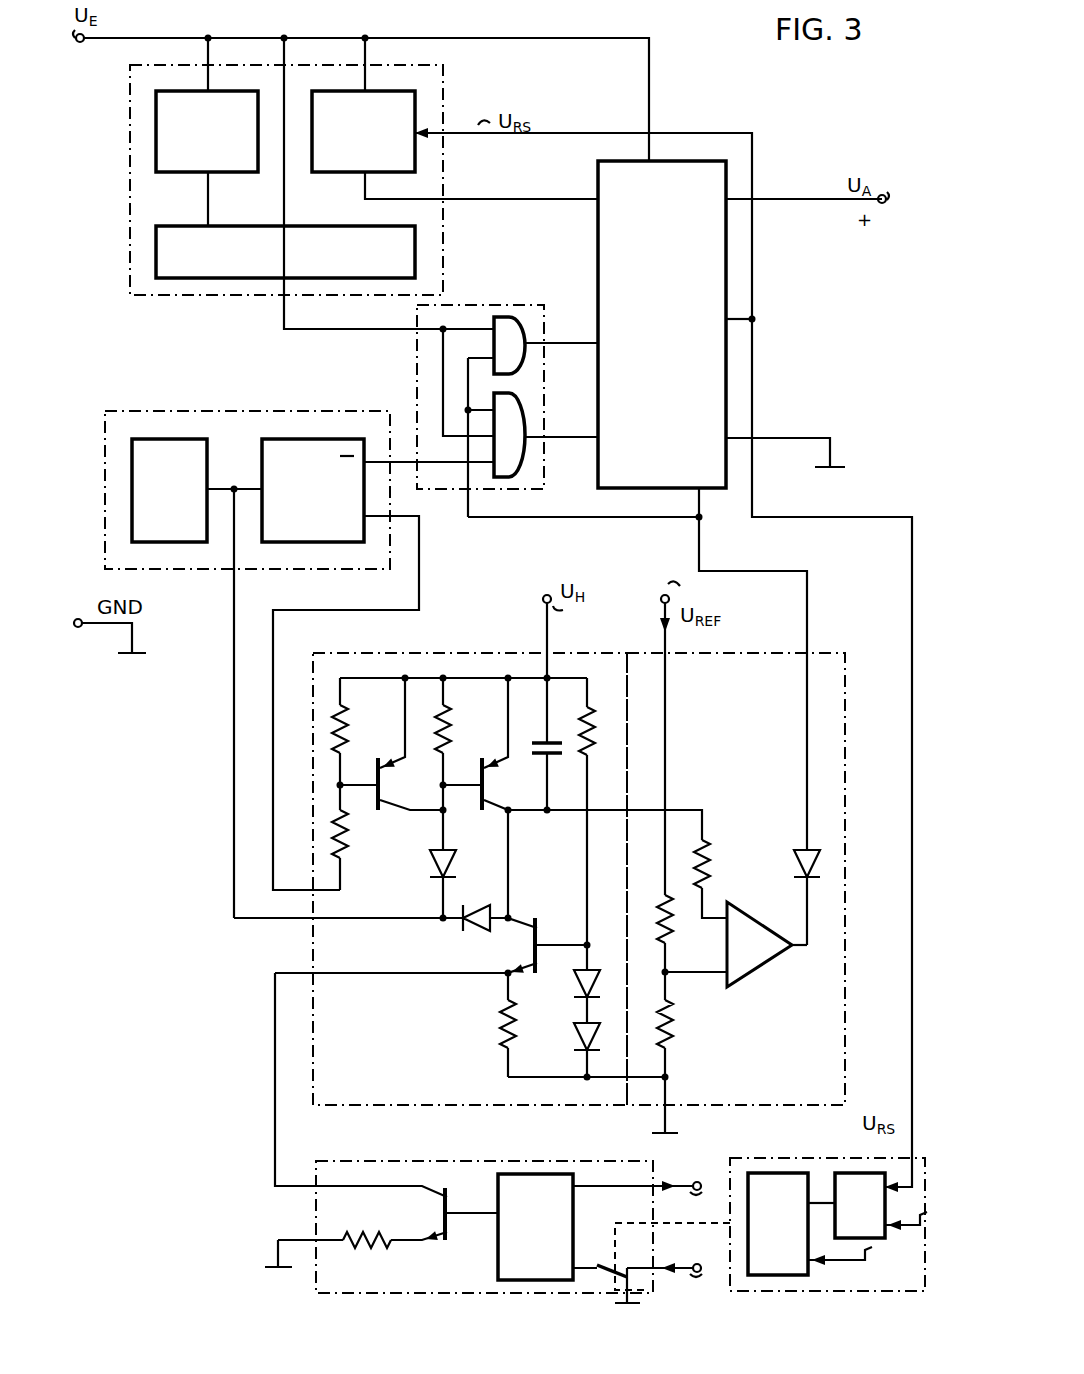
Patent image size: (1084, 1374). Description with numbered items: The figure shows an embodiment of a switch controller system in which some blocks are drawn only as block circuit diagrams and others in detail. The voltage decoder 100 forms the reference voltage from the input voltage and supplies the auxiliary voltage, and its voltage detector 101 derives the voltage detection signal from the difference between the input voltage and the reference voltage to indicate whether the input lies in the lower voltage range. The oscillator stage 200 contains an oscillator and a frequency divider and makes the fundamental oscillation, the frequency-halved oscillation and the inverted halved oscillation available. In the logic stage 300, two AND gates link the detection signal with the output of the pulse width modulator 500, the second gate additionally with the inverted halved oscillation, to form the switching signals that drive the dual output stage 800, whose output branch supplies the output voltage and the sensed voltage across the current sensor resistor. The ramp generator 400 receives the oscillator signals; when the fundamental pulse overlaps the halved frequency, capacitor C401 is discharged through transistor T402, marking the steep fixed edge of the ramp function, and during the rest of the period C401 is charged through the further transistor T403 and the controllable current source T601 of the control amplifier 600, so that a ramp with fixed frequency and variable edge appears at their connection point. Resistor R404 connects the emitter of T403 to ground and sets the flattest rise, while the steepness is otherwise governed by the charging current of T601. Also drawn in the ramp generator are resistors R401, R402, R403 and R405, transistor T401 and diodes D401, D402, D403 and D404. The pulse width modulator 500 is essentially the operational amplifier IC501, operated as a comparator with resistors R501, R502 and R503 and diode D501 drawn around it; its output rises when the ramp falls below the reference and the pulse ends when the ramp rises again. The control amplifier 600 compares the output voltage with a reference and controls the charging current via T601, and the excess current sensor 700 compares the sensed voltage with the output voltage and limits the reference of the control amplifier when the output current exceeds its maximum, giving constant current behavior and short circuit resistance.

The voltage decoder 100 is at (364, 196).
The voltage detector 101 is at (255, 280).
The oscillator stage 200 is at (150, 407).
The logic stage 300 is at (478, 302).
The ramp generator 400 is at (443, 835).
The pulse width modulator 500 is at (751, 857).
The control amplifier 600 is at (447, 1140).
The excess current sensor 700 is at (770, 1155).
The dual output stage 800 is at (697, 156).
The resistor R401 is at (355, 703).
The resistor R402 is at (328, 848).
The resistor R403 is at (452, 703).
The resistor R404 is at (497, 1033).
The resistor R405 is at (605, 718).
The capacitor C401 is at (560, 766).
The transistor T401 is at (368, 775).
The transistor T402 is at (492, 755).
The further transistor T403 is at (520, 962).
The diode D401 is at (428, 860).
The diode D402 is at (453, 922).
The diode D403 is at (570, 1038).
The diode D404 is at (566, 985).
The resistor R501 is at (680, 937).
The resistor R502 is at (673, 1047).
The resistor R503 is at (735, 890).
The operational amplifier IC501 is at (782, 958).
The diode D501 is at (798, 848).
The controllable current source T601 is at (450, 1225).